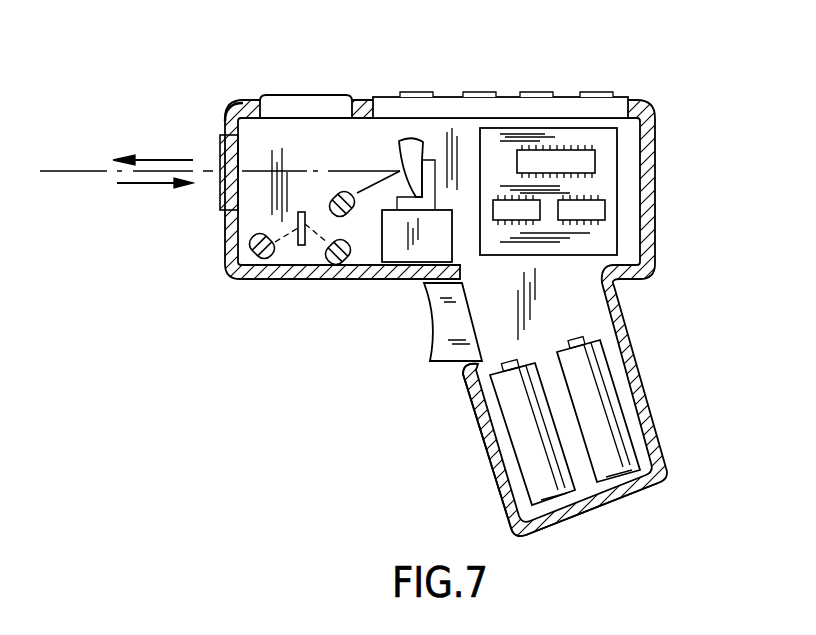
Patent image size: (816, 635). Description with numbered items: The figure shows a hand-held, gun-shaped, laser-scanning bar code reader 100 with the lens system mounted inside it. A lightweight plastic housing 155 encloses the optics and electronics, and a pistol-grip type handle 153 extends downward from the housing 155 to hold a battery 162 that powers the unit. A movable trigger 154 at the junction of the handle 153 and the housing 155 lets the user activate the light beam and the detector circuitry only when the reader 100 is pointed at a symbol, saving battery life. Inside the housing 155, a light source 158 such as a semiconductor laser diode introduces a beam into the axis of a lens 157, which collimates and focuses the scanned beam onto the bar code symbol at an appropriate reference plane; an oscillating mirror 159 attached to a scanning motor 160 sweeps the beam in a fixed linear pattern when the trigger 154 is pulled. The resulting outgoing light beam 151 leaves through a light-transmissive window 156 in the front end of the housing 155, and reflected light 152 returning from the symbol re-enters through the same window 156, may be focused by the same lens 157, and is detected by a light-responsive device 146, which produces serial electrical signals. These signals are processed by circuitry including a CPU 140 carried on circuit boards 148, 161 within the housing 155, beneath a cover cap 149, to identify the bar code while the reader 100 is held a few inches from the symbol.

The reader unit 100 is at (408, 317).
The CPU 140 is at (530, 152).
The light-responsive device 146 is at (263, 258).
The upper circuit board 148 is at (568, 100).
The cover cap 149 is at (330, 103).
The outgoing light beam 151 is at (147, 158).
The reflected light 152 is at (145, 185).
The handle 153 is at (488, 448).
The trigger 154 is at (428, 359).
The housing 155 is at (651, 220).
The light-transmissive window 156 is at (218, 137).
The lens 157 is at (343, 191).
The light source 158 is at (337, 260).
The oscillating mirror 159 is at (410, 138).
The scanning motor 160 is at (398, 250).
The circuit board 161 is at (609, 135).
The battery 162 is at (618, 405).